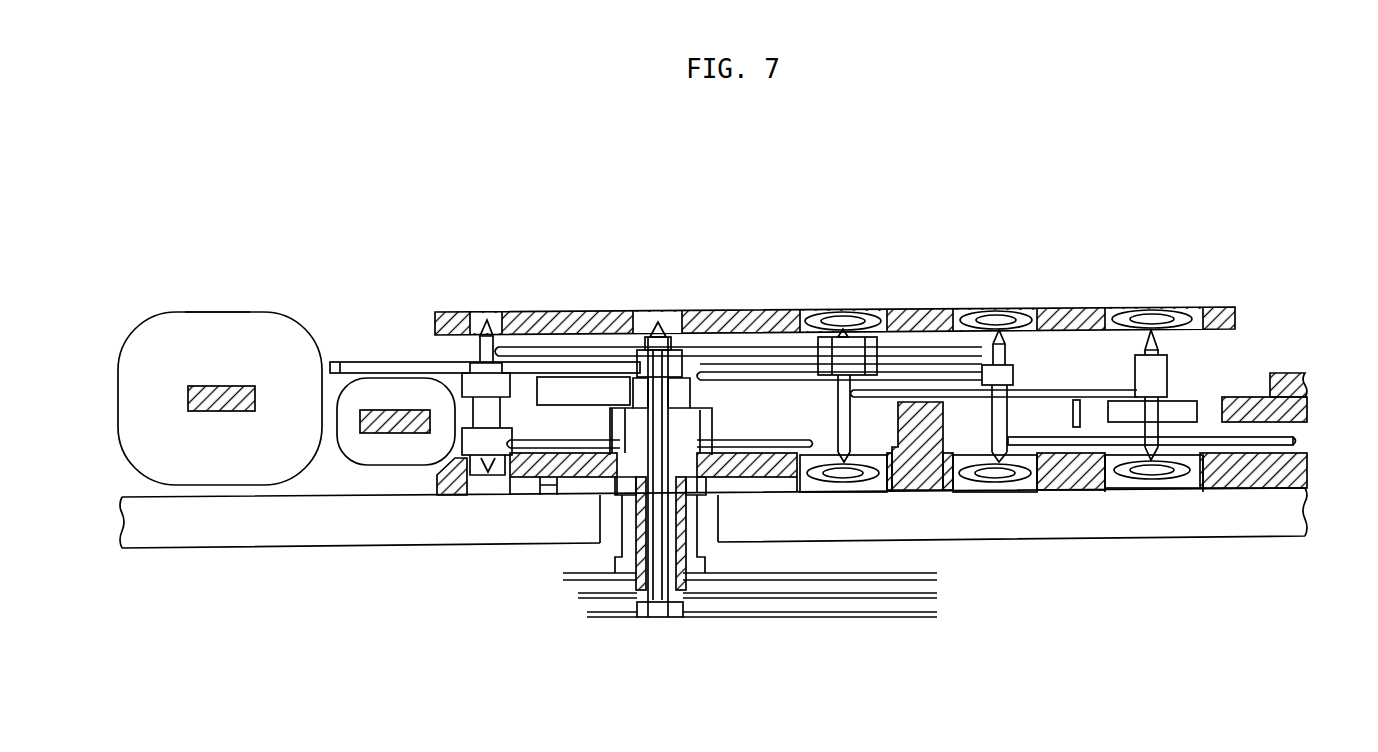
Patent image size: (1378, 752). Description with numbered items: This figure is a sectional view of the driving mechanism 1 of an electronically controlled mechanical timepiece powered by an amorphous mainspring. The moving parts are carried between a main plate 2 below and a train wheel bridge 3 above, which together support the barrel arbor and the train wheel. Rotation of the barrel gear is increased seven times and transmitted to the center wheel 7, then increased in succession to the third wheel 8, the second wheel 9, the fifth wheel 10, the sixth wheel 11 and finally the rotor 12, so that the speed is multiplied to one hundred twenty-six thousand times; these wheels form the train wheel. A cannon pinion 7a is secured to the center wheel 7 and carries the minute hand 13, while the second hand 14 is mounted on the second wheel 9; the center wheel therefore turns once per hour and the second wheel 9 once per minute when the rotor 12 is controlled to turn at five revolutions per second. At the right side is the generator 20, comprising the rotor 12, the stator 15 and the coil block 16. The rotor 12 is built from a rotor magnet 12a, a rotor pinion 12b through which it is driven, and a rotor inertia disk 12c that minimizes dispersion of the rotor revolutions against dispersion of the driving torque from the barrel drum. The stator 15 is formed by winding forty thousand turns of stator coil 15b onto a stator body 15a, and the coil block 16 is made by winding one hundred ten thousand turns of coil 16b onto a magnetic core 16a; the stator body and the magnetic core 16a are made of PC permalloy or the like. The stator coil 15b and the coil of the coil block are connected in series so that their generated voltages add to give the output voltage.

The driving mechanism 1 is at (167, 171).
The main plate 2 is at (560, 470).
The train wheel bridge 3 is at (580, 320).
The center wheel 7 is at (700, 430).
The cannon pinion 7a is at (640, 585).
The third wheel 8 is at (488, 440).
The second wheel 9 is at (686, 335).
The fifth wheel 10 is at (900, 318).
The sixth wheel 11 is at (1012, 375).
The rotor 12 is at (1165, 378).
The rotor magnet 12a is at (1192, 402).
The rotor pinion 12b is at (1125, 470).
The rotor inertia disk 12c is at (1070, 440).
The minute hand 13 is at (768, 598).
The second hand 14 is at (836, 618).
The stator 15 is at (1280, 440).
The stator body 15a is at (1232, 428).
The stator coil 15b is at (392, 392).
The coil block 16 is at (186, 318).
The magnetic core 16a is at (222, 411).
The coil 16b is at (248, 325).
The generator 20 is at (1280, 359).